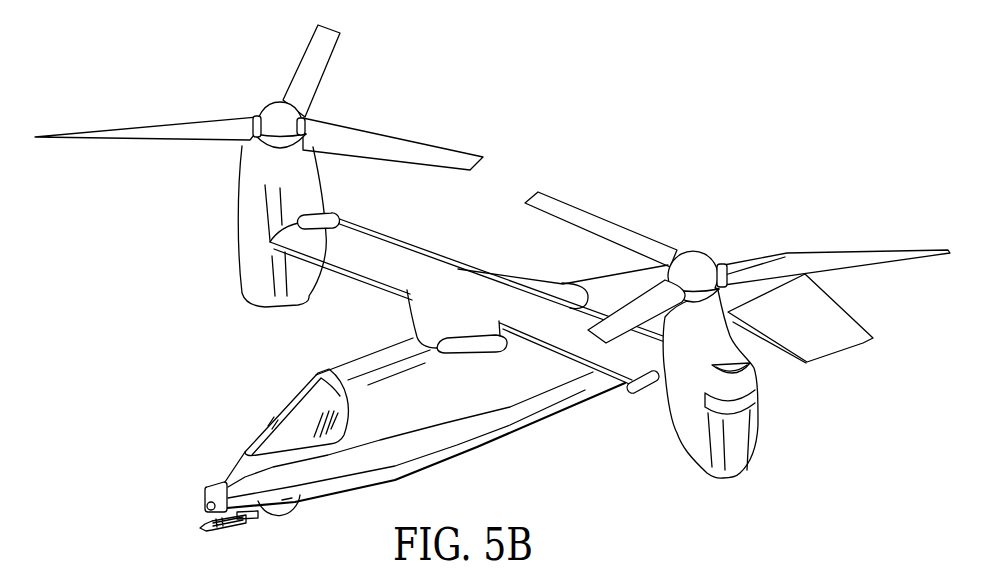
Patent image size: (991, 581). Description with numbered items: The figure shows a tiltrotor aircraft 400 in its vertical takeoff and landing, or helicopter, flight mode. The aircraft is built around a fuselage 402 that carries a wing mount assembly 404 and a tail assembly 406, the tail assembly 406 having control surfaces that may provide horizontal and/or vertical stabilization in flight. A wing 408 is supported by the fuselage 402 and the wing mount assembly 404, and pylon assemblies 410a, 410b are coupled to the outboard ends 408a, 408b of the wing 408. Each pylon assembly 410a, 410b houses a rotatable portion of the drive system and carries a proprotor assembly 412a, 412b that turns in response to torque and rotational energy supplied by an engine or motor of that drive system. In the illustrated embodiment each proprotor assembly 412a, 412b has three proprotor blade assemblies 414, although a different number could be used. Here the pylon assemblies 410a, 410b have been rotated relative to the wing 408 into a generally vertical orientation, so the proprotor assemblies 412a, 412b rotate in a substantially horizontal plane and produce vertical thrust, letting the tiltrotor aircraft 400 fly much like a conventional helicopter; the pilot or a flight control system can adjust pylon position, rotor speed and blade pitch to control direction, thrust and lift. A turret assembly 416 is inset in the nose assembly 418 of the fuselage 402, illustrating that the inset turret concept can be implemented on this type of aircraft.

The tiltrotor aircraft 400 is at (541, 148).
The fuselage 402 is at (473, 447).
The wing mount assembly 404 is at (412, 314).
The tail assembly 406 is at (840, 353).
The wing 408 is at (435, 271).
The outboard end of wing 408a is at (650, 388).
The outboard end of wing 408b is at (327, 222).
The pylon assembly 410a is at (732, 478).
The pylon assembly 410b is at (240, 280).
The proprotor assembly 412a is at (697, 260).
The proprotor assembly 412b is at (272, 108).
The proprotor blade assemblies 414 is at (98, 128).
The turret assembly 416 is at (207, 498).
The nose assembly 418 is at (215, 463).